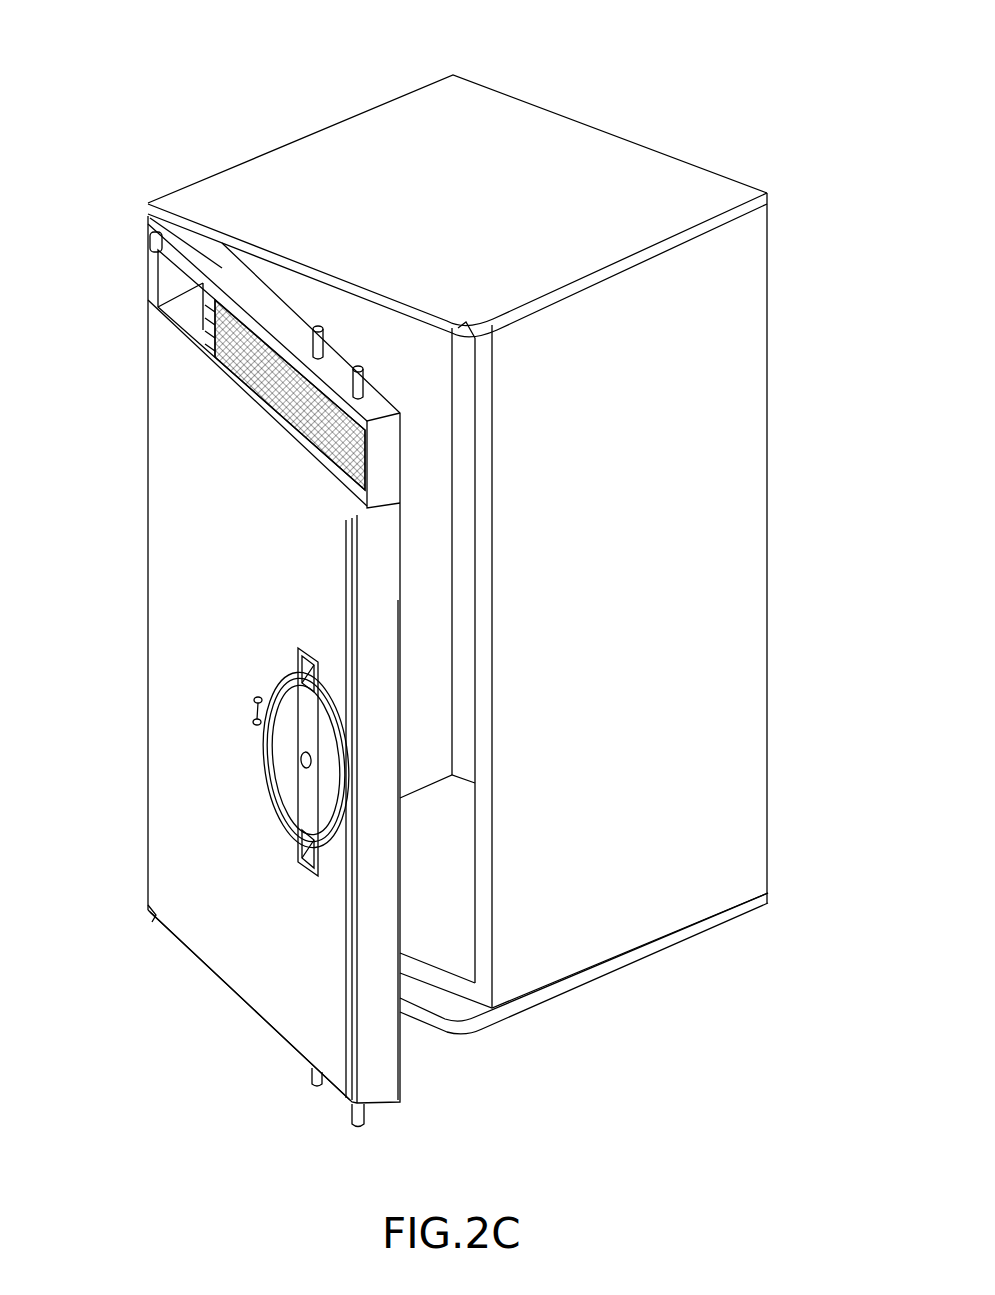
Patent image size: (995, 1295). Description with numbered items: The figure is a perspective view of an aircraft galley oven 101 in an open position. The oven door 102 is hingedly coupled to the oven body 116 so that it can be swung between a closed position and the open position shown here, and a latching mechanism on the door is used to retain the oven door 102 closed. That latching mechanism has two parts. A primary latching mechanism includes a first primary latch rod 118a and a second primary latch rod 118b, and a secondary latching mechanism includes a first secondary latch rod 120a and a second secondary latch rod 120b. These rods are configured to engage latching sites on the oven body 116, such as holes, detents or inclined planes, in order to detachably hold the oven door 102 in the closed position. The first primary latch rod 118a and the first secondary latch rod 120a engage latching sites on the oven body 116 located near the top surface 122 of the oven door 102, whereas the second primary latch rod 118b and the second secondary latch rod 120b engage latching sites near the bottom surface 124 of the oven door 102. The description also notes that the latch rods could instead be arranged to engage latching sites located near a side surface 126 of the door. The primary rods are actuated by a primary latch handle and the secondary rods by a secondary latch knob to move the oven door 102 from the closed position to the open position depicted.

The aircraft galley oven 101 is at (154, 45).
The oven door 102 is at (170, 410).
The oven body 116 is at (750, 410).
The first primary latch rod 118a is at (318, 325).
The second primary latch rod 118b is at (319, 1088).
The first secondary latch rod 120a is at (359, 365).
The second secondary latch rod 120b is at (358, 1125).
The top surface 122 is at (150, 241).
The bottom surface 124 is at (236, 992).
The side surface 126 is at (380, 980).